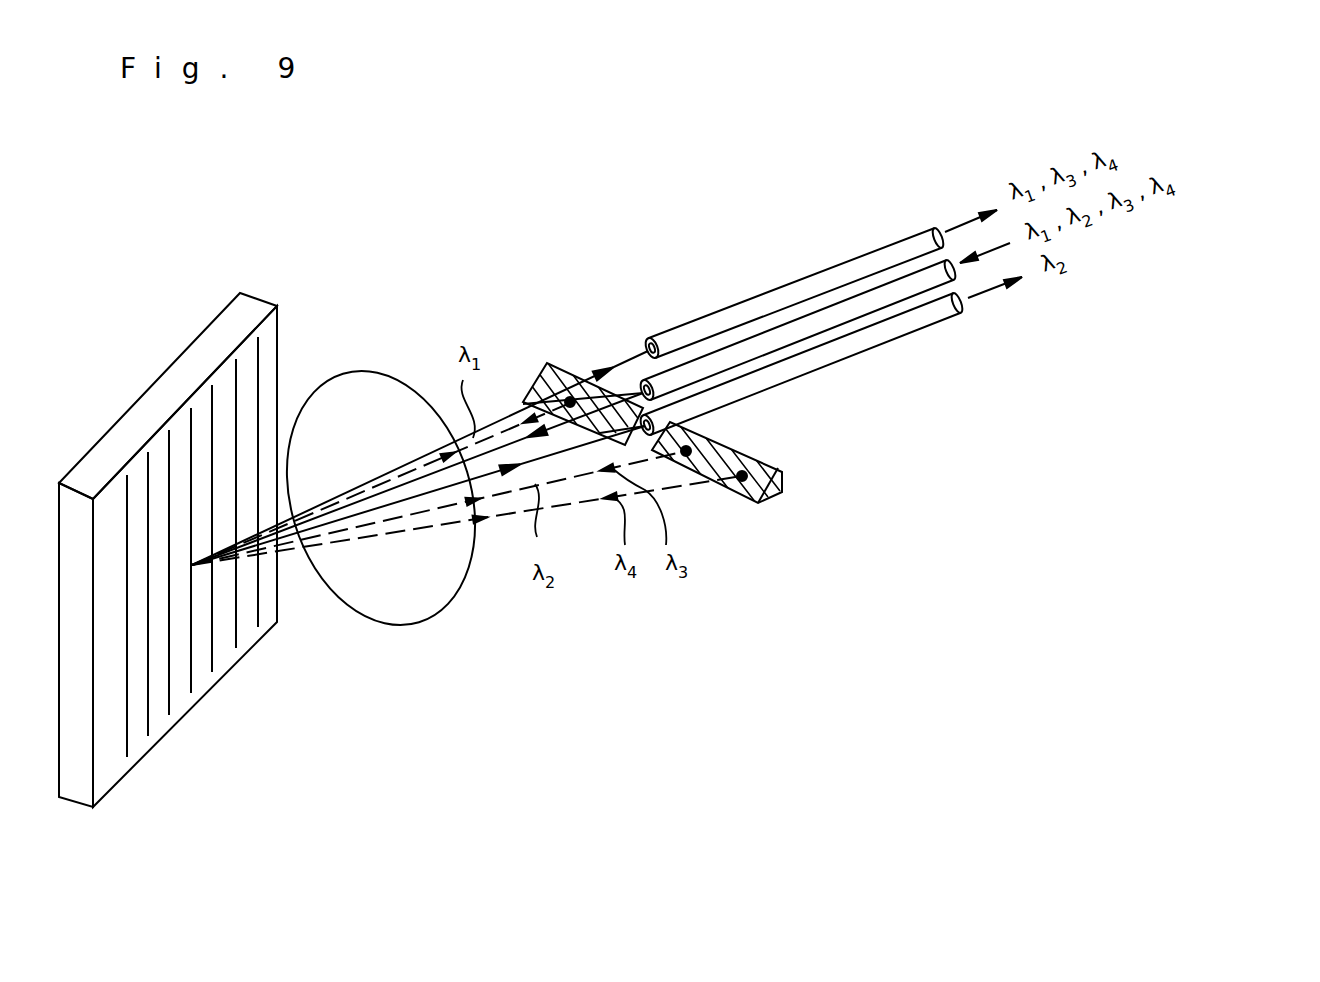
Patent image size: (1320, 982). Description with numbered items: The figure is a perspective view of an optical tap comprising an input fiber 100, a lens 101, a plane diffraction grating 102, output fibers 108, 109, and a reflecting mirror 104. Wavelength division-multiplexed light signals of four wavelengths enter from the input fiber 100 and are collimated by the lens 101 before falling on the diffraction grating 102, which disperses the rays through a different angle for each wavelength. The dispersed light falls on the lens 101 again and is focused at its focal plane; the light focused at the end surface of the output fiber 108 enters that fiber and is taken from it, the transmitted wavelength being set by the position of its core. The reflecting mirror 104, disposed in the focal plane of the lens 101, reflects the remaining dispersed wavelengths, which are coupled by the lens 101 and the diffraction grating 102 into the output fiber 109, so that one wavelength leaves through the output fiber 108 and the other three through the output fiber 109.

The input fiber 100 is at (927, 278).
The lens 101 is at (408, 625).
The plane diffraction grating 102 is at (152, 747).
The reflecting mirror 104 is at (758, 505).
The output fiber 108 is at (902, 325).
The output fiber 109 is at (770, 300).